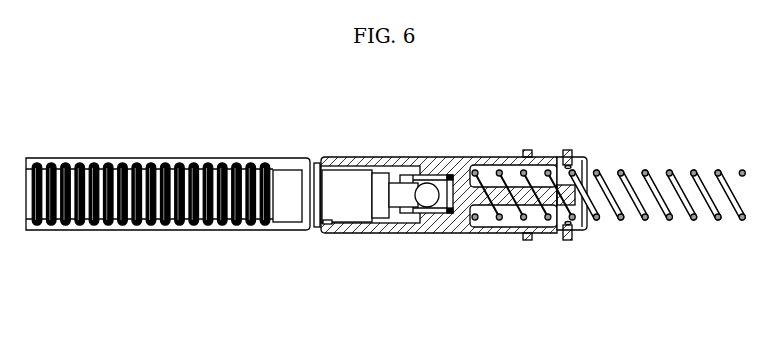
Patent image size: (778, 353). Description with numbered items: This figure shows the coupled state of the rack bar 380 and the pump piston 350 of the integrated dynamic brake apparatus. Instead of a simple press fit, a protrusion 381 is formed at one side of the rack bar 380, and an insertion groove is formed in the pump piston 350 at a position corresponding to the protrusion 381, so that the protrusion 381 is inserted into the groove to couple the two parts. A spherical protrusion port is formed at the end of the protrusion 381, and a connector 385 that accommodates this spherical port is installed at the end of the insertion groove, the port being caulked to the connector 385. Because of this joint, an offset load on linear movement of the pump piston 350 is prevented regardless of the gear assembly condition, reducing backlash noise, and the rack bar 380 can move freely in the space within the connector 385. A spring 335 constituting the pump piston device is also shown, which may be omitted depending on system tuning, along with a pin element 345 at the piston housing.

The spring 335 is at (665, 222).
The fixing pin 345 is at (525, 242).
The pump piston 350 is at (446, 156).
The rack bar 380 is at (132, 231).
The protrusion 381 is at (345, 216).
The connector 385 is at (443, 212).